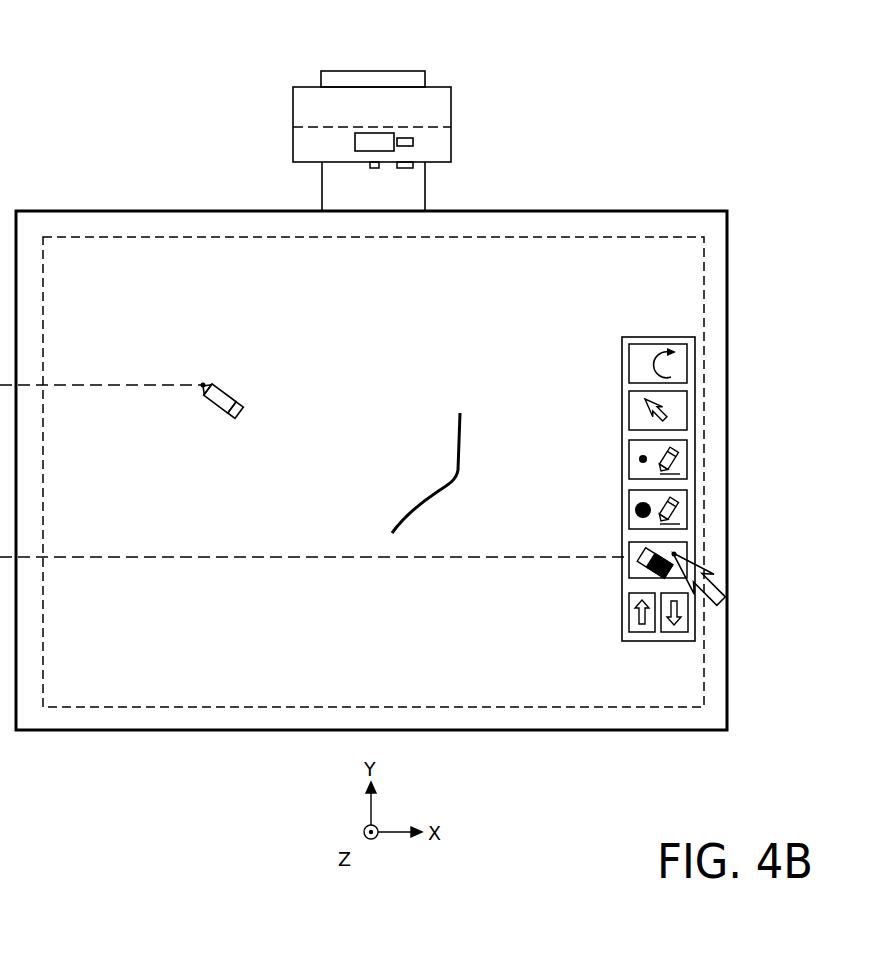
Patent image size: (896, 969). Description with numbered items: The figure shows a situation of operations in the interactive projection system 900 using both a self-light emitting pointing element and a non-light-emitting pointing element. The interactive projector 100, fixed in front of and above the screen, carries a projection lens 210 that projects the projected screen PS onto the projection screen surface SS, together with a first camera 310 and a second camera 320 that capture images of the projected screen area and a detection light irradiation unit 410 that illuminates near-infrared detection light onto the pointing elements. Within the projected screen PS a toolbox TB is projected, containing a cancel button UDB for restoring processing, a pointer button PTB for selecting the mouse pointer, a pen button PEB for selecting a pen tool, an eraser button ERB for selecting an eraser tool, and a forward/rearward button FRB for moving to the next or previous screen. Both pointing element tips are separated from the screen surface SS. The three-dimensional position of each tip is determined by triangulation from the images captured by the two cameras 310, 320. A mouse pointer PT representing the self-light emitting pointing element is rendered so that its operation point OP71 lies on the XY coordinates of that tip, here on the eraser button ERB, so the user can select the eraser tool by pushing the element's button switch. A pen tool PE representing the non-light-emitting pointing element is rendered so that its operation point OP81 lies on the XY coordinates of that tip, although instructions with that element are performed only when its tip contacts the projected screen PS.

The interactive projection system 900 is at (702, 104).
The interactive projector 100 is at (452, 107).
The projection lens 210 is at (355, 143).
The first camera 310 is at (414, 141).
The detection light irradiation unit 410 is at (370, 166).
The second camera 320 is at (425, 165).
The projection screen surface SS is at (82, 218).
The projected screen PS is at (170, 237).
The pen tool PE is at (237, 398).
The operation point of the pen tool OP81 is at (204, 384).
The toolbox TB is at (639, 337).
The cancel button UDB is at (629, 362).
The pointer button PTB is at (629, 410).
The pen button PEB is at (629, 461).
The eraser button ERB is at (629, 555).
The forward/rearward button FRB is at (660, 606).
The mouse pointer PT is at (726, 598).
The operation point of the mouse pointer OP71 is at (677, 553).